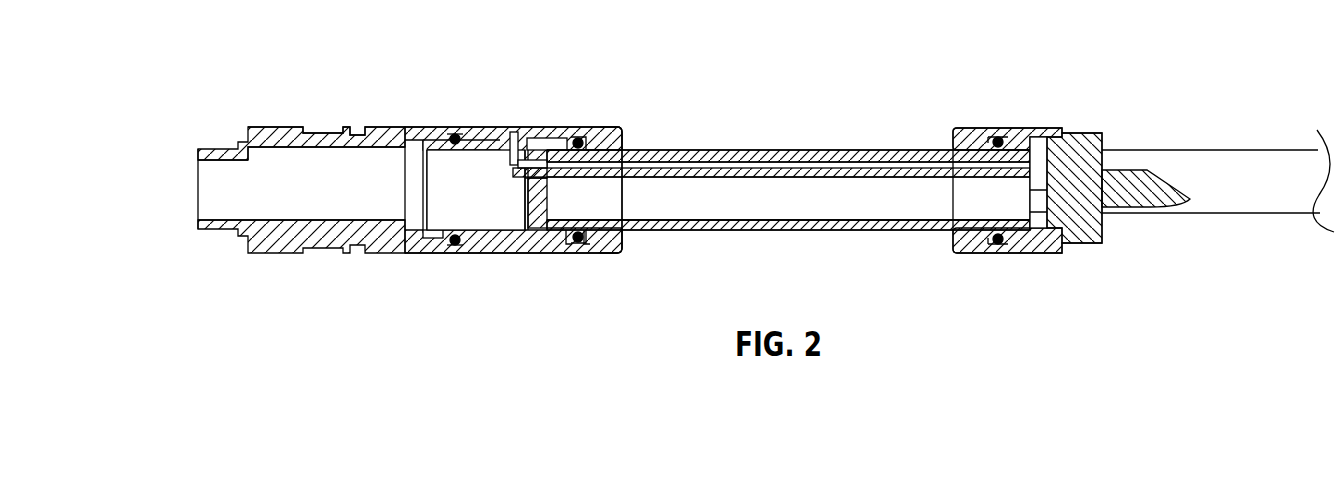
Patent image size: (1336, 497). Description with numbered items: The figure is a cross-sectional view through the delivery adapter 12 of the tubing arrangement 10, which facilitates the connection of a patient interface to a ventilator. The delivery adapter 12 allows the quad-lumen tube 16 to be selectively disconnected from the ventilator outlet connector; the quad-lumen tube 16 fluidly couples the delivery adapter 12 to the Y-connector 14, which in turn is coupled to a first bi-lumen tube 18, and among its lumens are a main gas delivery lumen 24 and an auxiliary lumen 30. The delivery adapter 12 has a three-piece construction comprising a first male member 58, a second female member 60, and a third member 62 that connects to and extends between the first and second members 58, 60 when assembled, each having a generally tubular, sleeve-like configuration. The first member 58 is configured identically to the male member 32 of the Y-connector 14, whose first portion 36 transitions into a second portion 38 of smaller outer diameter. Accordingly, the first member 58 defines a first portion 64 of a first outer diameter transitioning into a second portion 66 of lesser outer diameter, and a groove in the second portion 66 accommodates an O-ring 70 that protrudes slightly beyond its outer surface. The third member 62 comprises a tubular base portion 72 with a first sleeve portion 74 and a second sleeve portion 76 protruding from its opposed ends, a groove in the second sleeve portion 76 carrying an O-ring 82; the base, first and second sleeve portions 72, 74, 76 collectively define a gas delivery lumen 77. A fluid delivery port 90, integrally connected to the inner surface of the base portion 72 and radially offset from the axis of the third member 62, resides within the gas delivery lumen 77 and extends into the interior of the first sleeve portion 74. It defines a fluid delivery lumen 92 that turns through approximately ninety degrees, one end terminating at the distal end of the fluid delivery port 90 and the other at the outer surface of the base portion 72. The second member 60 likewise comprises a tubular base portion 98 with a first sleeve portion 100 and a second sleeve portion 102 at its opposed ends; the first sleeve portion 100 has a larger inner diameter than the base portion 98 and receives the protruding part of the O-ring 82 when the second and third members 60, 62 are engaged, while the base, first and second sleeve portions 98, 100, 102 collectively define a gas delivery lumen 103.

The tubing arrangement 10 is at (921, 52).
The delivery adapter 12 is at (446, 110).
The Y-connector 14 is at (1060, 110).
The quad-lumen tube 16 is at (795, 138).
The first bi-lumen tube 18 is at (1223, 143).
The main gas delivery lumen 24 is at (770, 200).
The auxiliary lumen 30 is at (685, 162).
The male member 32 is at (940, 252).
The first portion 36 is at (963, 240).
The second portion 38 is at (1015, 140).
The first member 58 is at (608, 257).
The second member 60 is at (262, 257).
The third member 62 is at (494, 260).
The first portion 64 is at (608, 138).
The second portion 66 is at (566, 140).
The O-ring 70 is at (577, 248).
The tubular base portion 72 is at (527, 247).
The first sleeve portion 74 is at (586, 250).
The second sleeve portion 76 is at (440, 250).
The gas delivery lumen 77 is at (473, 205).
The O-ring 82 is at (455, 245).
The fluid delivery port 90 is at (473, 135).
The fluid delivery lumen 92 is at (512, 135).
The tubular base portion 98 is at (275, 130).
The first sleeve portion 100 is at (437, 132).
The second sleeve portion 102 is at (212, 150).
The gas delivery lumen 103 is at (282, 188).